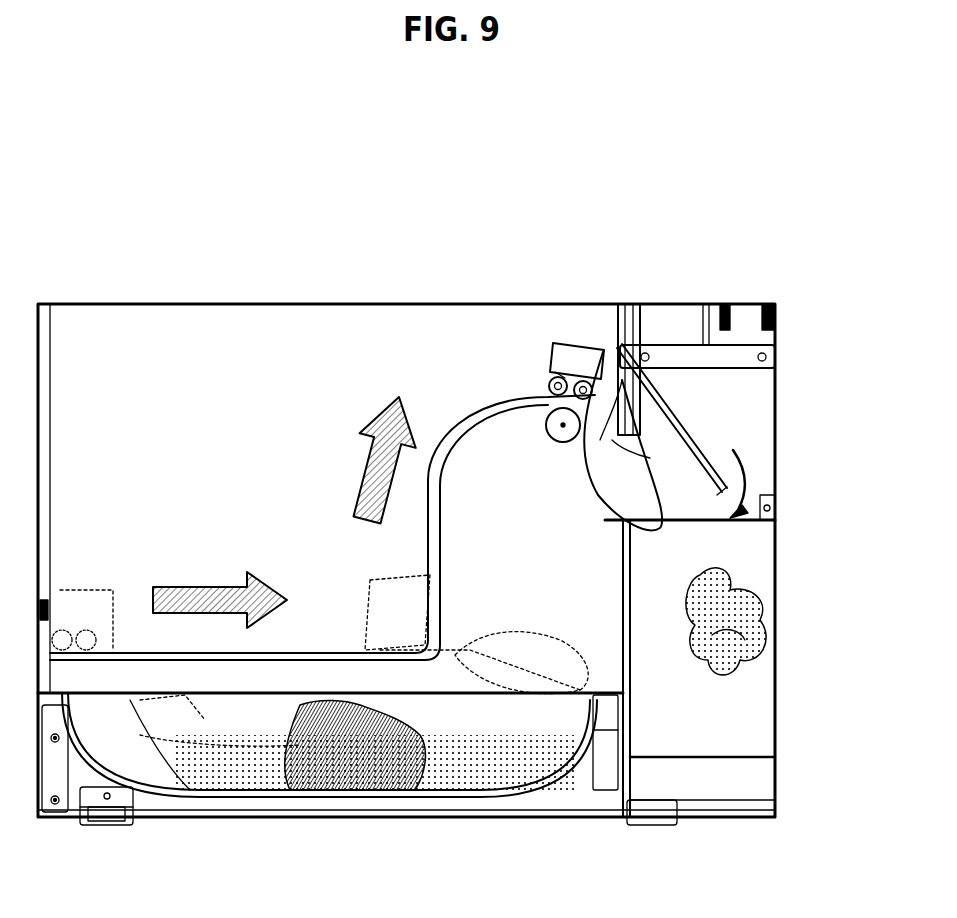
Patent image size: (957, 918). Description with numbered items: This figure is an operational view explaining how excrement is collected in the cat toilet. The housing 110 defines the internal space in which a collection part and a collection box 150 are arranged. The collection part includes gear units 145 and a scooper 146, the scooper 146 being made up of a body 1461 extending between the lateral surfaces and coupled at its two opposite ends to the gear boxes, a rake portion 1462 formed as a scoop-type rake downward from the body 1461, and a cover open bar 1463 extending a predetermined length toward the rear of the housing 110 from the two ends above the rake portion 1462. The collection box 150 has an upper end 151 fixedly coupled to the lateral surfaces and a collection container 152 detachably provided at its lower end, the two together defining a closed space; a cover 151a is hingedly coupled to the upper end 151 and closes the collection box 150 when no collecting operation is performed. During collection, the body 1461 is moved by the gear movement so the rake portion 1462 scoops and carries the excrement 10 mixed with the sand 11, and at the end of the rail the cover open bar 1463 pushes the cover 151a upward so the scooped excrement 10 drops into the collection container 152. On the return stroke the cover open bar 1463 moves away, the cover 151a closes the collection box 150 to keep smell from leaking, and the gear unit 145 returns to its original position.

The housing 110 is at (272, 303).
The gear unit 145 is at (548, 385).
The scooper 146 is at (705, 203).
The body 1461 is at (580, 346).
The rake portion 1462 is at (622, 445).
The cover open bar 1463 is at (655, 372).
The cover 151a is at (670, 420).
The collection box 150 is at (903, 432).
The upper end 151 is at (777, 434).
The collection container 152 is at (777, 562).
The object (garment) 10 is at (777, 653).
The excrement sand 11 is at (458, 775).